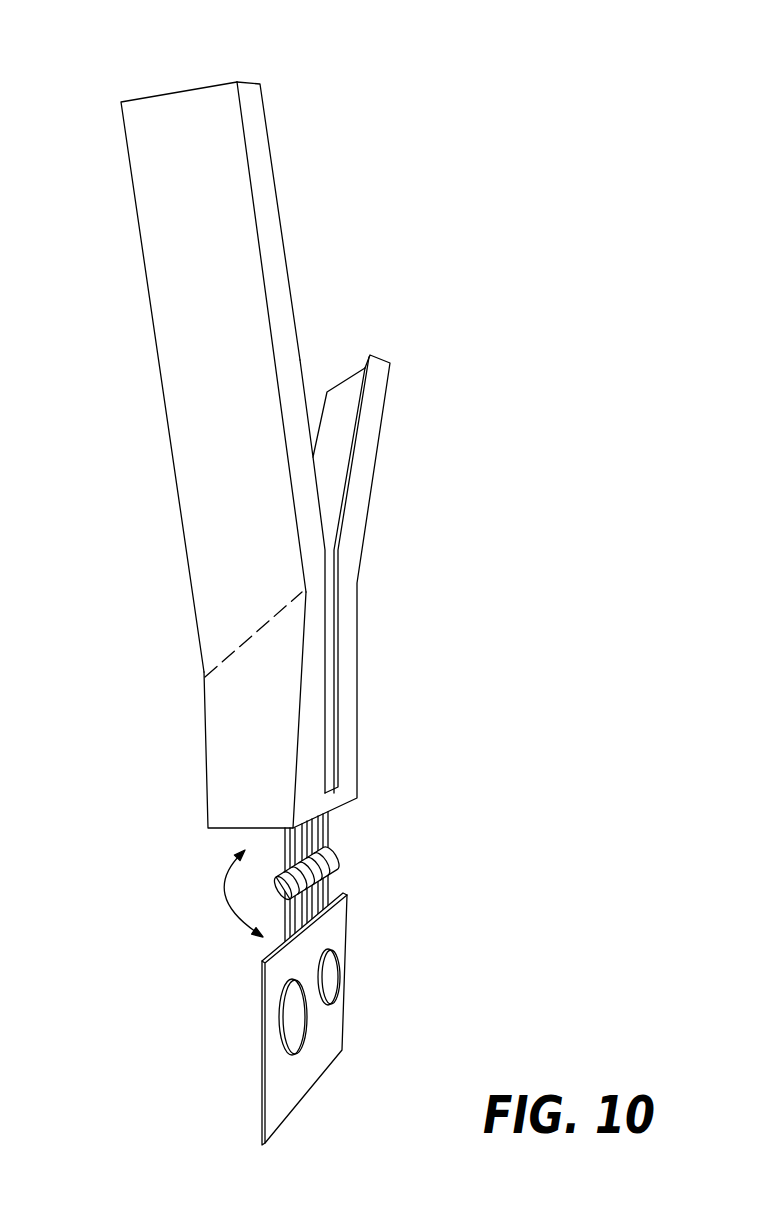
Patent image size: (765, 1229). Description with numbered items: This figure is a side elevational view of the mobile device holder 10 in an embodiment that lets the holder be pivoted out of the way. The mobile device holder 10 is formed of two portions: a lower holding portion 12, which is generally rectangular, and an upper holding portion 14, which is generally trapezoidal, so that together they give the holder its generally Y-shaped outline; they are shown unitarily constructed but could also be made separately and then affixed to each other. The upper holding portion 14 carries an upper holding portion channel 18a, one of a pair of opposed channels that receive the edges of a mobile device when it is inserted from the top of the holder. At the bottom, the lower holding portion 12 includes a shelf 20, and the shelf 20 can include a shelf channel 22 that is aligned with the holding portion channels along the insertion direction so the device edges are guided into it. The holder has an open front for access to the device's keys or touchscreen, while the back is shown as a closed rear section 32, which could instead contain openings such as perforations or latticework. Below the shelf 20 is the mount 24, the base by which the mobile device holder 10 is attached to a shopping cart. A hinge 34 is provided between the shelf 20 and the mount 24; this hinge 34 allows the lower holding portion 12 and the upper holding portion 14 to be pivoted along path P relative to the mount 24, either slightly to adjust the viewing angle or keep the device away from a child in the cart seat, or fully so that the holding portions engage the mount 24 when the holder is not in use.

The mobile device holder 10 is at (131, 591).
The lower holding portion 12 is at (225, 725).
The upper holding portion 14 is at (183, 395).
The upper holding portion channel 18a is at (183, 320).
The shelf 20 is at (340, 807).
The shelf channel 22 is at (358, 792).
The mount 24 is at (267, 976).
The rear section 32 is at (308, 388).
The hinge 34 is at (338, 858).
The path P is at (228, 881).